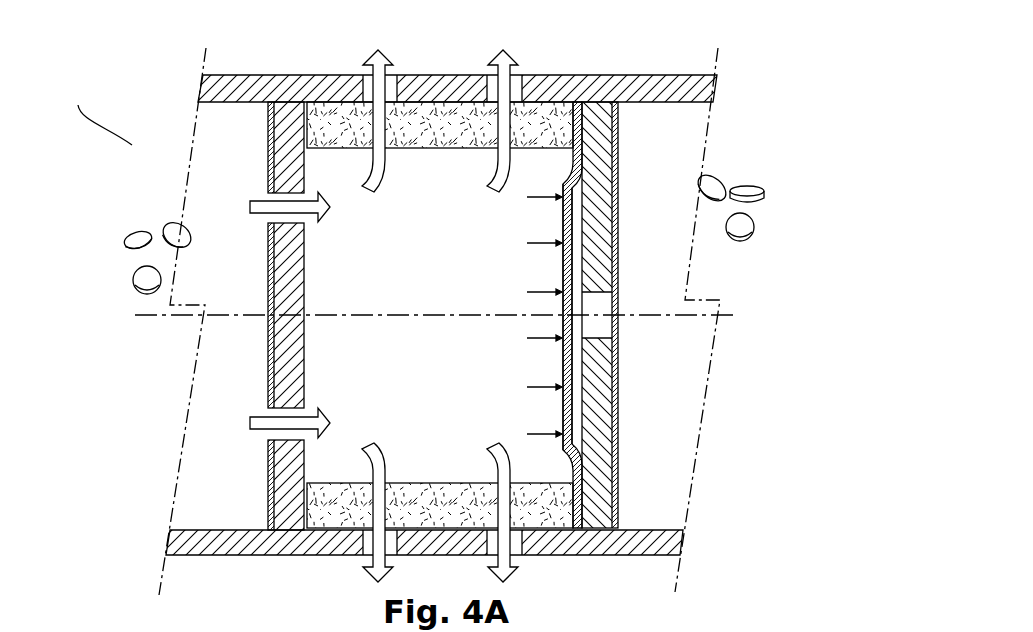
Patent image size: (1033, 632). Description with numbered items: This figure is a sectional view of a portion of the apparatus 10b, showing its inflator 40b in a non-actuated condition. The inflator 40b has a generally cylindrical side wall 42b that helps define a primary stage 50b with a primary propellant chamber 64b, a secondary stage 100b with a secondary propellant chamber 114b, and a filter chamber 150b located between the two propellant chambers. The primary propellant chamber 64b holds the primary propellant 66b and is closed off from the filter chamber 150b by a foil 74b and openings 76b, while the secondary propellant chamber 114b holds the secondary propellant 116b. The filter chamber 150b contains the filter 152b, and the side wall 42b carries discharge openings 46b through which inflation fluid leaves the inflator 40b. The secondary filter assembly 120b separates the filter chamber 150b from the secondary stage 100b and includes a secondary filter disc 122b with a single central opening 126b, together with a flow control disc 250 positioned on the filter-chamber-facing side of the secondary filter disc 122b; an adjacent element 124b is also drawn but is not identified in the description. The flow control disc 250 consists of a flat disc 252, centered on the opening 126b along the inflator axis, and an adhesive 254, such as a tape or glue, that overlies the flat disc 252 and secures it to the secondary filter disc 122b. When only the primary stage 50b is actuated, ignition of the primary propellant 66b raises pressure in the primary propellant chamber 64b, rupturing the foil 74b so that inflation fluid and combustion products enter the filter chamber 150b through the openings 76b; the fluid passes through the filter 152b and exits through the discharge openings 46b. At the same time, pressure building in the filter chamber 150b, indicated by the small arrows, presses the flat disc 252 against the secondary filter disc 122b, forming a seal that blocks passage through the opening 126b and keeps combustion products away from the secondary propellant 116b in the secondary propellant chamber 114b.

The apparatus 10b is at (135, 147).
The inflator 40b is at (78, 105).
The side wall 42b is at (387, 98).
The discharge openings 46b is at (492, 92).
The primary stage 50b is at (153, 443).
The primary propellant chamber 64b is at (251, 190).
The primary propellant 66b is at (147, 280).
The foil 74b is at (268, 323).
The openings 76b is at (292, 222).
The secondary stage 100b is at (673, 432).
The secondary propellant chamber 114b is at (683, 141).
The secondary propellant 116b is at (712, 192).
The secondary filter assembly 120b is at (631, 315).
The secondary filter disc 122b is at (595, 237).
The outer wall layer 124b is at (618, 368).
The opening 126b is at (600, 323).
The filter chamber 150b is at (397, 268).
The filter 152b is at (441, 133).
The flow control disc 250 is at (527, 276).
The flat disc 252 is at (577, 268).
The adhesive 254 is at (562, 308).